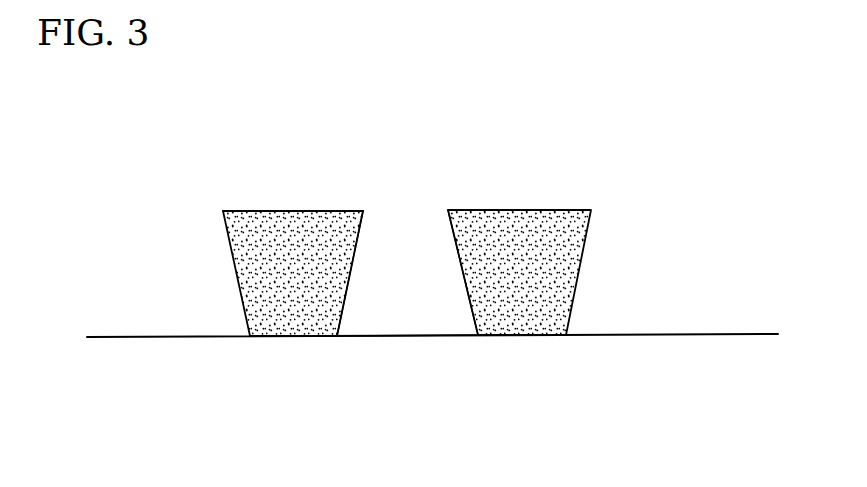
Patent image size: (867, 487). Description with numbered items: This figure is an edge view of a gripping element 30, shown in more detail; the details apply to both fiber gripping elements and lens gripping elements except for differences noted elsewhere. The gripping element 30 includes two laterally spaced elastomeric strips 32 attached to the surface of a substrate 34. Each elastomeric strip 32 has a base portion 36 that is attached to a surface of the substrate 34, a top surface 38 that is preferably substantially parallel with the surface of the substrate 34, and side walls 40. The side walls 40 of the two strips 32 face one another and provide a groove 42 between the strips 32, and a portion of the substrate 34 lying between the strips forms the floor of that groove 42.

The gripping element 30 is at (188, 183).
The elastomeric strips 32 is at (280, 235).
The substrate 34 is at (132, 337).
The base portion 36 is at (280, 337).
The top surface 38 is at (335, 208).
The side walls 40 is at (457, 257).
The groove 42 is at (407, 295).